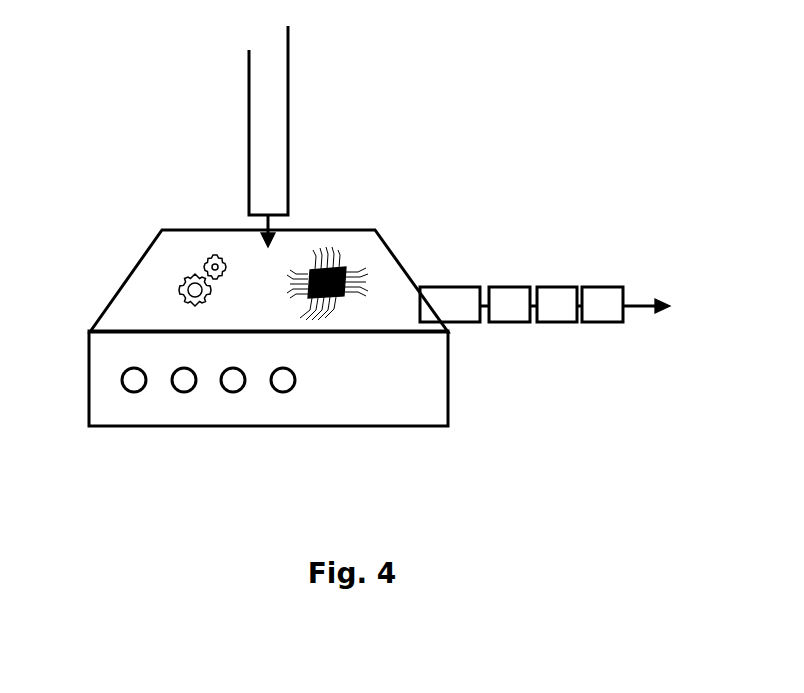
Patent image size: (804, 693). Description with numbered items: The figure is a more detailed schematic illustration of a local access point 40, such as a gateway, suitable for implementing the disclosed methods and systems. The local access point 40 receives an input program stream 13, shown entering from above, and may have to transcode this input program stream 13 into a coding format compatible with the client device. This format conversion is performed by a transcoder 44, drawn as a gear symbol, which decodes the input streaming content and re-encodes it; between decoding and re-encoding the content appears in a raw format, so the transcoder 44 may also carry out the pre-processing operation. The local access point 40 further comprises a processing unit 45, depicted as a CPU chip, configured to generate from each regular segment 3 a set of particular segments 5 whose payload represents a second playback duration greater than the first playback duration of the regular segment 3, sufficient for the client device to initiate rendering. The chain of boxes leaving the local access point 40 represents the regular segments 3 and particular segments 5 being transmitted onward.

The input program stream 13 is at (267, 172).
The regular segment 3 is at (448, 293).
The particular segment 5 is at (602, 297).
The local access point 40 is at (350, 402).
The transcoder 44 is at (185, 285).
The processing unit 45 is at (340, 264).